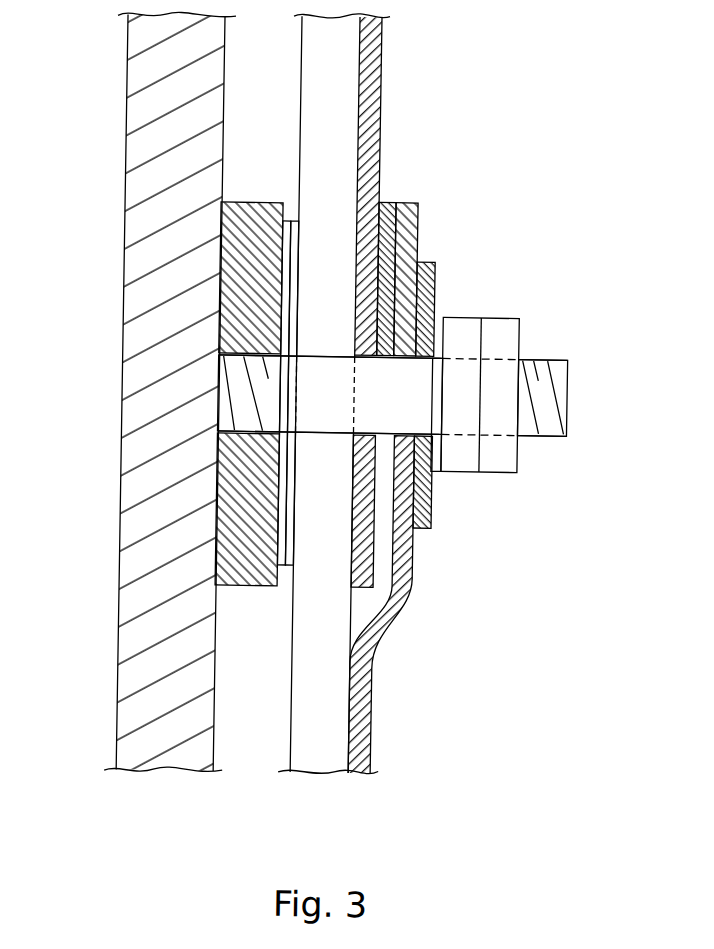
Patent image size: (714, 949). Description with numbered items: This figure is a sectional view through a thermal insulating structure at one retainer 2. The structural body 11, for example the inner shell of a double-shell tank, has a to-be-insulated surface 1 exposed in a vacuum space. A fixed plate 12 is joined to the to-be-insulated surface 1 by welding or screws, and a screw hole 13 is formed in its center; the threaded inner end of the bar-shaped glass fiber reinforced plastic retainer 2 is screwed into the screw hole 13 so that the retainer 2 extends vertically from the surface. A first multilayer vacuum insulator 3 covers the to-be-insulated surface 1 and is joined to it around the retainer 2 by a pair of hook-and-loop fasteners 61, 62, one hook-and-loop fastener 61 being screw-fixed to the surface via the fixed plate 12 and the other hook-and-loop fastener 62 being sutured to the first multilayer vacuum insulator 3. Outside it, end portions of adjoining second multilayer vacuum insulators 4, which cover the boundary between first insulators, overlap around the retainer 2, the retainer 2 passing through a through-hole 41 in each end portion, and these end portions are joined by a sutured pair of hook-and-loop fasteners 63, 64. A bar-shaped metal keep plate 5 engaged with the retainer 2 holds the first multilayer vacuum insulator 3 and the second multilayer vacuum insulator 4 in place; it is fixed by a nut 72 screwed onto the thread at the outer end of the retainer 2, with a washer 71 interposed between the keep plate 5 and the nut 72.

The to-be-insulated surface 1 is at (218, 725).
The structural body 11 is at (165, 755).
The fixed plate 12 is at (250, 264).
The screw hole 13 is at (216, 380).
The retainer 2 is at (570, 381).
The first multilayer vacuum insulator 3 is at (324, 756).
The second multilayer vacuum insulator 4 is at (376, 37).
The through-hole 41 is at (363, 432).
The keep plate 5 is at (423, 260).
The hook-and-loop fastener 61 is at (280, 568).
The hook-and-loop fastener 62 is at (288, 570).
The hook-and-loop fastener 63 is at (382, 202).
The hook-and-loop fastener 64 is at (394, 202).
The washer 71 is at (439, 474).
The nut 72 is at (498, 454).